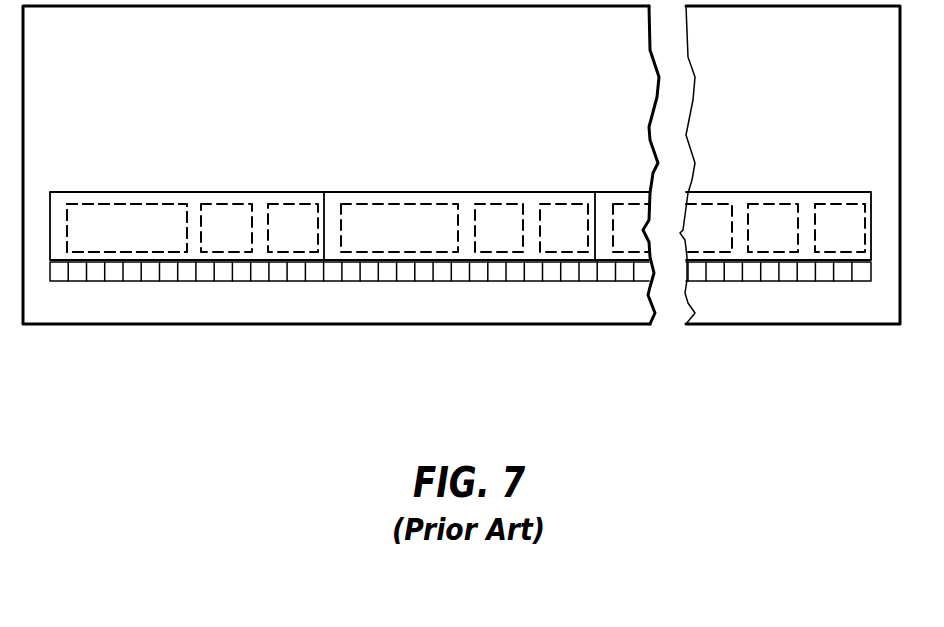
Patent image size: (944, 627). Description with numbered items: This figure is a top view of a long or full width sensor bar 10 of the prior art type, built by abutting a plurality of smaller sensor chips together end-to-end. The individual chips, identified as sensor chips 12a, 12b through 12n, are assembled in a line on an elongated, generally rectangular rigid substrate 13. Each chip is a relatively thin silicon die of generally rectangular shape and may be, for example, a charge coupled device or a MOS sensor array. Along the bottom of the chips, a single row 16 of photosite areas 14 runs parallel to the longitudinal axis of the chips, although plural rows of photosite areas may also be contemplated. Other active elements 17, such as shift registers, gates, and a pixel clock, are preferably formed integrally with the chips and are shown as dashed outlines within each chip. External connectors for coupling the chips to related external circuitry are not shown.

The sensor bar 10 is at (579, 375).
The sensor chip 12a is at (127, 192).
The sensor chip 12b is at (403, 192).
The sensor chip 12n is at (786, 192).
The substrate 13 is at (415, 324).
The photosite areas 14 is at (60, 272).
The row of photosite areas 16 is at (186, 272).
The active elements 17 is at (167, 213).